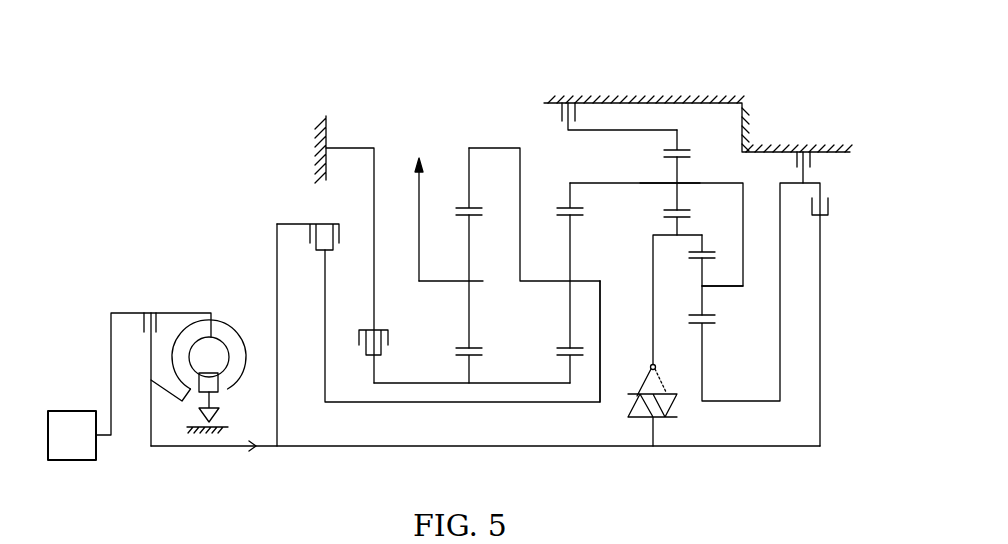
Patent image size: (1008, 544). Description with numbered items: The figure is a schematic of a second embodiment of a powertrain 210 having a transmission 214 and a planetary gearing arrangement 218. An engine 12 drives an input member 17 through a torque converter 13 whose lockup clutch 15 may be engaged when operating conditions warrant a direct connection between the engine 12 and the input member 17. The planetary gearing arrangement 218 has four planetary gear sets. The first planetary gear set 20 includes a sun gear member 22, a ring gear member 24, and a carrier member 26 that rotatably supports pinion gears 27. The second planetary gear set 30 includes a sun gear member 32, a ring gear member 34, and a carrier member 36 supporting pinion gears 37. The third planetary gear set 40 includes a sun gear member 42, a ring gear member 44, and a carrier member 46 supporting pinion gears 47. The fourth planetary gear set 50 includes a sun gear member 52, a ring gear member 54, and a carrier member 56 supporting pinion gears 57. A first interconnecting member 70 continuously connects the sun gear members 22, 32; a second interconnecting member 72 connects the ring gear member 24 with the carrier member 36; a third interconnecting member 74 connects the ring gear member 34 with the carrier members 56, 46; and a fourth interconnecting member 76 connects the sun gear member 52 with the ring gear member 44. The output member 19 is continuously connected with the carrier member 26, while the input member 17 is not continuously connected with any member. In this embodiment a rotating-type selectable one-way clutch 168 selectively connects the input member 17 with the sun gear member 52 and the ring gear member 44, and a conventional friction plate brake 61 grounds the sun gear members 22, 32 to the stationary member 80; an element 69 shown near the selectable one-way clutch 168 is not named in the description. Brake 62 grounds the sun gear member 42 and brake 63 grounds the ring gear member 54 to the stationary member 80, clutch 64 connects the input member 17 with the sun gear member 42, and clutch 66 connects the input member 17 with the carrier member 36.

The engine 12 is at (129, 386).
The torque converter 13 is at (241, 322).
The lockup clutch 15 is at (140, 343).
The input member 17 is at (218, 448).
The output member 19 is at (419, 222).
The first planetary gear set 20 is at (472, 294).
The sun gear member 22 is at (483, 358).
The ring gear member 24 is at (469, 205).
The carrier member 26 is at (462, 280).
The pinion gears 27 is at (472, 257).
The second planetary gear set 30 is at (565, 308).
The sun gear member 32 is at (558, 352).
The ring gear member 34 is at (567, 205).
The carrier member 36 is at (588, 283).
The pinion gears 37 is at (572, 252).
The third planetary gear set 40 is at (718, 314).
The sun gear member 42 is at (700, 328).
The ring gear member 44 is at (705, 250).
The carrier member 46 is at (718, 290).
The pinion gears 47 is at (700, 306).
The fourth planetary gear set 50 is at (680, 173).
The sun gear member 52 is at (665, 220).
The ring gear member 54 is at (677, 132).
The carrier member 56 is at (655, 182).
The pinion gears 57 is at (677, 190).
The friction plate brake 61 is at (388, 356).
The torque-transmitting mechanism 62 is at (819, 164).
The torque-transmitting mechanism 63 is at (552, 117).
The torque-transmitting mechanism 64 is at (832, 212).
The torque-transmitting mechanism 66 is at (341, 259).
The switch 69 is at (640, 383).
The first interconnecting member 70 is at (520, 403).
The second interconnecting member 72 is at (521, 168).
The third interconnecting member 74 is at (605, 182).
The fourth interconnecting member 76 is at (653, 262).
The stationary member 80 is at (318, 120).
The selectable one-way clutch 168 is at (673, 417).
The powertrain 210 is at (568, 262).
The transmission 214 is at (616, 54).
The planetary gearing arrangement 218 is at (430, 119).